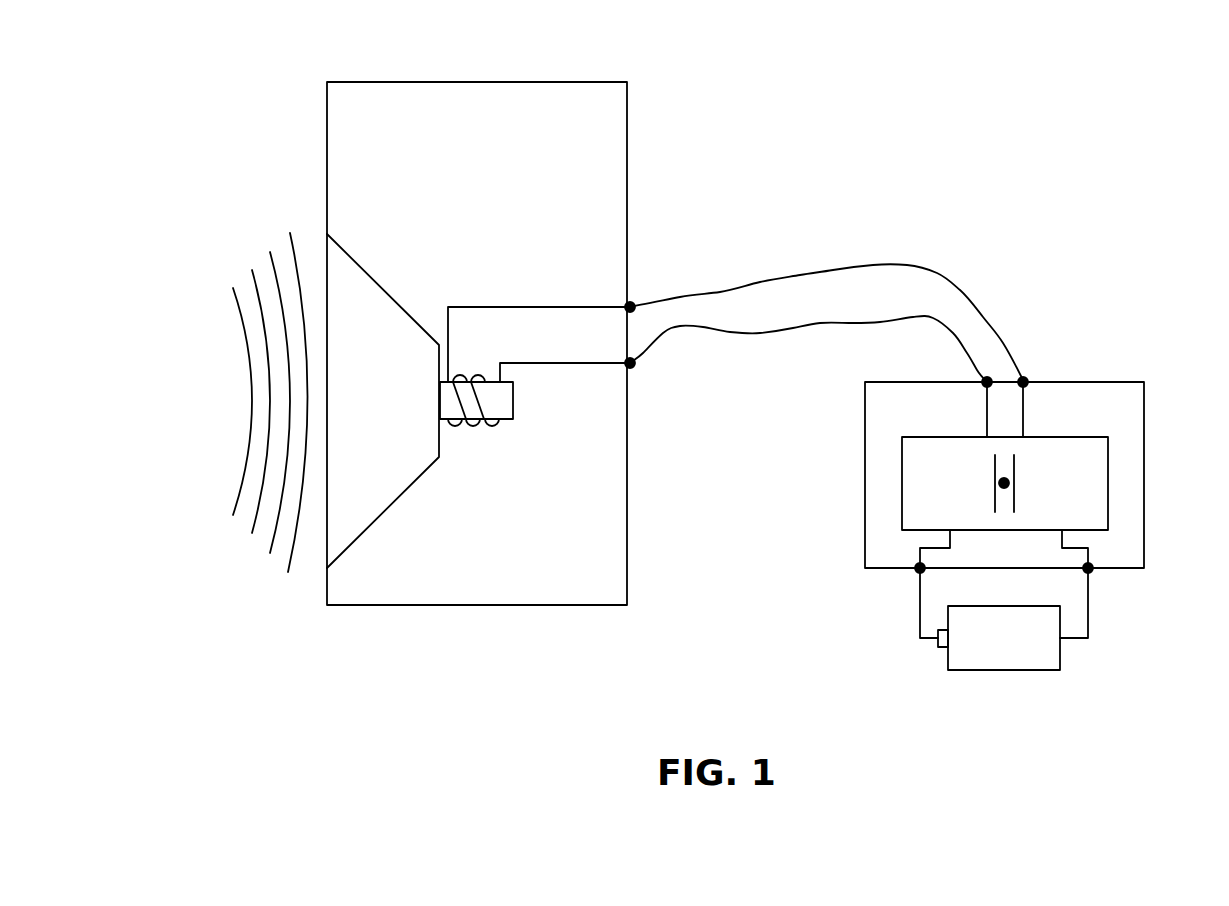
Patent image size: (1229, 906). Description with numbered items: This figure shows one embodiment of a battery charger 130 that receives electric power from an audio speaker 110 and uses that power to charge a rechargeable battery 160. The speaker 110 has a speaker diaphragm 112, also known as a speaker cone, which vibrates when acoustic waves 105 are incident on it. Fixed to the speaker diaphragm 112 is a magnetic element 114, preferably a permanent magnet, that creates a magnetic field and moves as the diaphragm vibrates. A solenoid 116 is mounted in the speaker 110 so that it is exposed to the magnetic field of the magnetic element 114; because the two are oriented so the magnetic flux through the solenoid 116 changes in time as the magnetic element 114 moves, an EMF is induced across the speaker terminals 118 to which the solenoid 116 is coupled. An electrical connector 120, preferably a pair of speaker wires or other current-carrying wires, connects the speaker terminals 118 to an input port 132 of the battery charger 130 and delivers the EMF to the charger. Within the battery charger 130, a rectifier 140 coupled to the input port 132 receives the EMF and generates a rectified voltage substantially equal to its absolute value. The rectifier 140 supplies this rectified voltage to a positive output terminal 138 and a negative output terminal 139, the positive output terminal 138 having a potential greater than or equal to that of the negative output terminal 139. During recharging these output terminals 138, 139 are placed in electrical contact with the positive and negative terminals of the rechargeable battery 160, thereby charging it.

The acoustic waves 105 is at (287, 523).
The audio speaker 110 is at (415, 605).
The speaker diaphragm 112 is at (360, 270).
The magnetic element 114 is at (513, 400).
The solenoid 116 is at (453, 427).
The speaker terminals 118 is at (683, 342).
The electrical connector 120 is at (680, 295).
The battery charger 130 is at (1144, 529).
The input port 132 is at (1030, 338).
The positive output terminal 138 is at (920, 595).
The negative output terminal 139 is at (1088, 595).
The rectifier 140 is at (1088, 437).
The rechargeable battery 160 is at (993, 670).